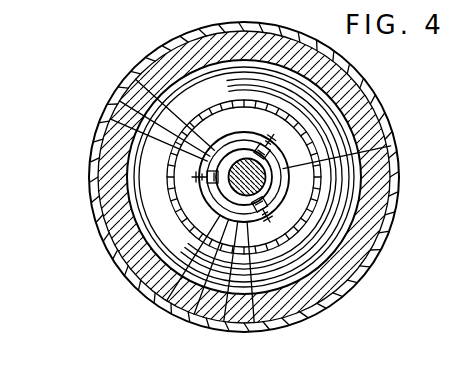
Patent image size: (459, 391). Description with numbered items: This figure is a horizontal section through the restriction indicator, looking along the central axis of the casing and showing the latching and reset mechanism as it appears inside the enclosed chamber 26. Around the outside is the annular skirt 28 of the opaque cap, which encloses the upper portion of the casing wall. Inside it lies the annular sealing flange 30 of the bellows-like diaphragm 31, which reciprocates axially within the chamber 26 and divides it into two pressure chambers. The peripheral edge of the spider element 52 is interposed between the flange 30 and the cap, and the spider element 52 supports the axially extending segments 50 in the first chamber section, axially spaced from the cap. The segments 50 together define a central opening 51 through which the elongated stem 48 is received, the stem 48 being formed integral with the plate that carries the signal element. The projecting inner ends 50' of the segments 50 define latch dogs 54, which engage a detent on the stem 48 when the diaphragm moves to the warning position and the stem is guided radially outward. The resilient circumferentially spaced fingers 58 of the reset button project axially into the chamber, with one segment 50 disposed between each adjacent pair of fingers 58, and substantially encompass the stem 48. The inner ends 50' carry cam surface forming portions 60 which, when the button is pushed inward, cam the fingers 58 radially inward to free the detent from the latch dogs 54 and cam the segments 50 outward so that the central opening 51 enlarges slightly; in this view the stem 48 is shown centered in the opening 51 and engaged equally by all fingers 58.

The enclosed chamber 26 is at (133, 173).
The annular skirt 28 is at (89, 205).
The annular sealing flange 30 is at (145, 239).
The bellows-like diaphragm 31 is at (159, 212).
The elongated stem 48 is at (266, 178).
The axially extending segments 50 is at (241, 197).
The projecting inner ends of segments 50' is at (137, 223).
The central opening 51 is at (167, 301).
The spider element 52 is at (290, 158).
The latch dogs 54 is at (136, 79).
The resilient fingers 58 is at (245, 104).
The cam surface forming portions 60 is at (278, 139).